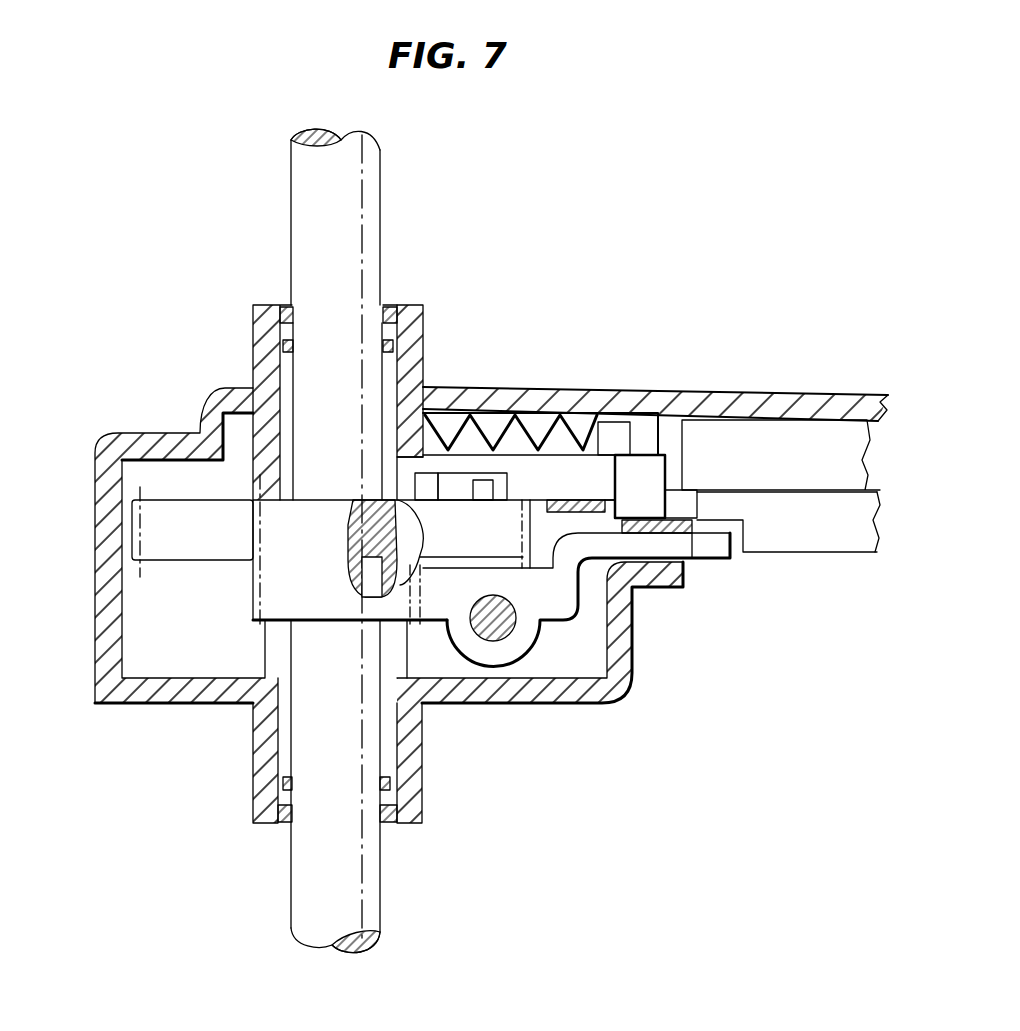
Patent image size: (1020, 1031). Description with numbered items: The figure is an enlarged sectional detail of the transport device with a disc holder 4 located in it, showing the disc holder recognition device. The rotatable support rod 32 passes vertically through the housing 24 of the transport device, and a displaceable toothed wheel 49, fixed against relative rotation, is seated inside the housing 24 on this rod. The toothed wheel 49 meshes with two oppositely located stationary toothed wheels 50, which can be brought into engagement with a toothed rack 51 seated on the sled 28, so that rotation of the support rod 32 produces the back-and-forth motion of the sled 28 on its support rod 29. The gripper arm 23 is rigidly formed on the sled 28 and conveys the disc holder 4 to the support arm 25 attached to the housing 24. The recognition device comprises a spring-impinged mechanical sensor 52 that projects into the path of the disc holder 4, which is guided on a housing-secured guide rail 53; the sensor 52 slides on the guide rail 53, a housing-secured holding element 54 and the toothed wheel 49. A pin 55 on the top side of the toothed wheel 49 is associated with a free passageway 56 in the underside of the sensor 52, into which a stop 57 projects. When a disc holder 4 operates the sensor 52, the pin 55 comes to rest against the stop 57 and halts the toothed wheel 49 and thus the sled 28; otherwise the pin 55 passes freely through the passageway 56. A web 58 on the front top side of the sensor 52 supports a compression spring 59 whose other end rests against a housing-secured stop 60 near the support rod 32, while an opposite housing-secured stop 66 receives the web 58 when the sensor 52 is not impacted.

The disc holder 4 is at (830, 532).
The gripper arm 23 is at (710, 545).
The housing 24 is at (158, 432).
The support arm 25 is at (832, 390).
The sled 28 is at (522, 635).
The support rod 29 is at (493, 630).
The support rod 32 is at (375, 865).
The displaceable toothed wheel 49 is at (162, 537).
The stationary toothed wheels 50 is at (287, 593).
The toothed rack 51 is at (415, 593).
The mechanical sensor 52 is at (652, 463).
The guide rail 53 is at (637, 535).
The holding element 54 is at (545, 513).
The pin 55 is at (510, 472).
The free passageway 56 is at (453, 483).
The stop 57 is at (528, 447).
The web 58 is at (620, 432).
The compression spring 59 is at (492, 478).
The housing-secured stop 60 is at (410, 425).
The housing-secured stop 66 is at (685, 430).